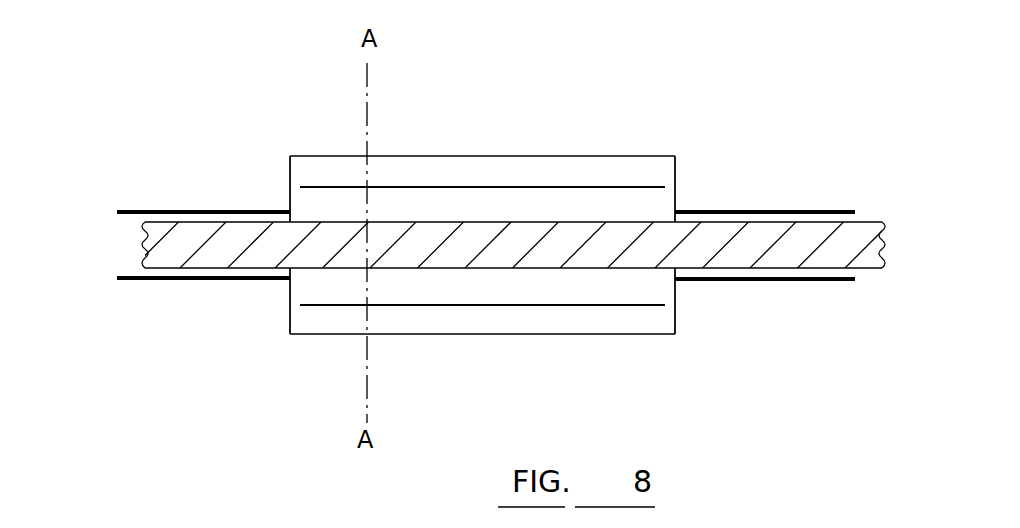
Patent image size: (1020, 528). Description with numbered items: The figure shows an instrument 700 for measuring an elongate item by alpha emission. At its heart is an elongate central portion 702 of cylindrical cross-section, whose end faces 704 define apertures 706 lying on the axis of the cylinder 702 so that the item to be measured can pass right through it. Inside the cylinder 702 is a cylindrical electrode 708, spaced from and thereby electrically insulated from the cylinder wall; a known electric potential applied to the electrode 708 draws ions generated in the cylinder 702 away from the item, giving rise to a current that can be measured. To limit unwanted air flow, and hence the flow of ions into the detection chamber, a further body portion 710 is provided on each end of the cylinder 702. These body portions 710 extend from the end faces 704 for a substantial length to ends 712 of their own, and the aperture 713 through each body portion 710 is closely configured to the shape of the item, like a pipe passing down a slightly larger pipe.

The instrument 700 is at (563, 140).
The elongate central portion 702 is at (412, 157).
The end faces 704 is at (290, 180).
The apertures 706 is at (275, 247).
The cylindrical electrode 708 is at (467, 187).
The body portion 710 is at (753, 212).
The ends 712 is at (112, 279).
The aperture 713 is at (172, 210).